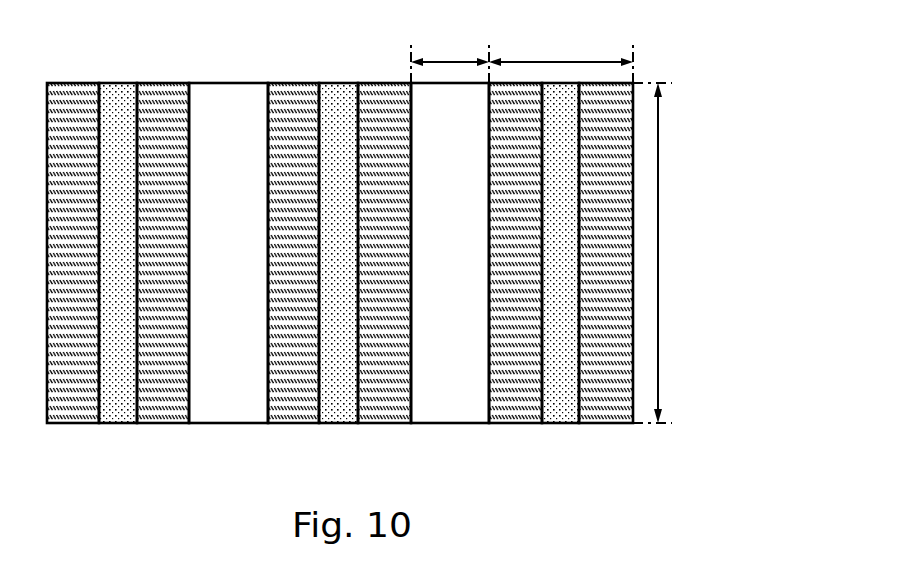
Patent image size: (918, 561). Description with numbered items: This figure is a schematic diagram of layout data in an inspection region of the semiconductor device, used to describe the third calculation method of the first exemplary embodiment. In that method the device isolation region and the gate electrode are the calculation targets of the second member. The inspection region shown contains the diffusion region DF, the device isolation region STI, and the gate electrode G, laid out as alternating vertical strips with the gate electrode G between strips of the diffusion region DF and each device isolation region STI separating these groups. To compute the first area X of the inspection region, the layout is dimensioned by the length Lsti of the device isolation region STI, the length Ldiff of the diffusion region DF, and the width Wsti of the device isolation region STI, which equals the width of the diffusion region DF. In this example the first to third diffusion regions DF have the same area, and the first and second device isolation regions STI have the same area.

The diffusion region DF is at (61, 412).
The gate electrode G is at (108, 412).
The device isolation region STI is at (339, 253).
The length of the device isolation region Lsti is at (450, 54).
The length of the diffusion region Ldiff is at (561, 54).
The width of the device isolation region Wsti is at (709, 253).